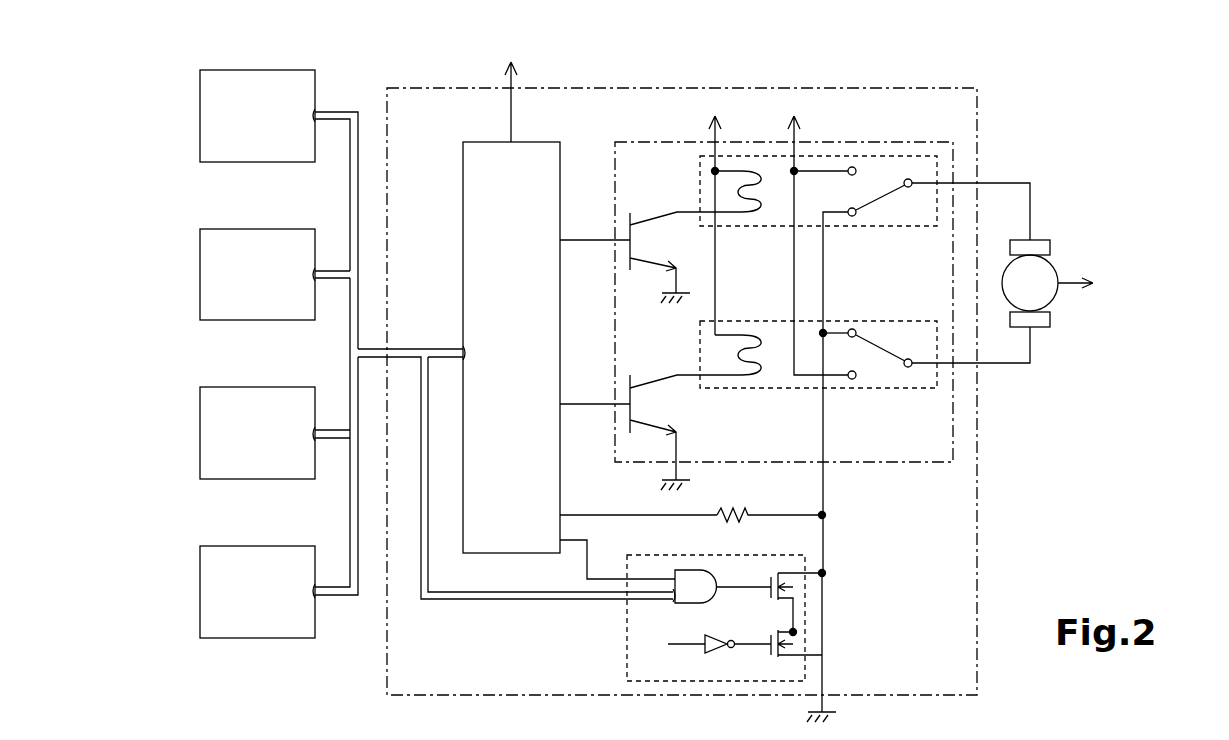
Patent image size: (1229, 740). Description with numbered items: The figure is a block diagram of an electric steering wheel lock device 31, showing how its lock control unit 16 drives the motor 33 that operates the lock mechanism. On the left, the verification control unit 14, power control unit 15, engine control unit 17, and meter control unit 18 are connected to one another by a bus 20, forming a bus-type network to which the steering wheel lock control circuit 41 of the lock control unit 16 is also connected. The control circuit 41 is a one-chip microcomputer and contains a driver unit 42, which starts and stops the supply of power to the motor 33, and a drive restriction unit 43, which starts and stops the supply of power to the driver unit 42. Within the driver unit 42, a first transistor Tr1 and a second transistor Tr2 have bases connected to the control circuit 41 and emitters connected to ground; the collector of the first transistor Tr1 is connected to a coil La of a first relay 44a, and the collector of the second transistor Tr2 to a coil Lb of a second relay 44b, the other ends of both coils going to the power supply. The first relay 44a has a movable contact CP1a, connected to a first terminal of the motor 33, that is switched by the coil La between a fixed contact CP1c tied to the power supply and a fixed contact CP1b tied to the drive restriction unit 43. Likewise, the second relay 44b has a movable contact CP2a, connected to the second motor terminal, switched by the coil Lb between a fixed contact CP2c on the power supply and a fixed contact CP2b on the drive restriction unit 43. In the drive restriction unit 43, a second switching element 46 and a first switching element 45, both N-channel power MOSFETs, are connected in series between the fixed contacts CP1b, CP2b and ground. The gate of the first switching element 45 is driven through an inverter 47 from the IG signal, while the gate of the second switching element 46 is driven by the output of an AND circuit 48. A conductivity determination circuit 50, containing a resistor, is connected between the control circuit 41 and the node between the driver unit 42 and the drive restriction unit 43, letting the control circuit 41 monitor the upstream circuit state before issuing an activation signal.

The verification control unit 14 is at (238, 70).
The power control unit 15 is at (230, 229).
The lock control unit 16 is at (977, 108).
The engine control unit 17 is at (230, 387).
The meter control unit 18 is at (230, 546).
The bus 20 is at (345, 111).
The steering wheel lock device 31 is at (1084, 92).
The motor 33 is at (1061, 268).
The steering wheel lock control circuit 41 is at (483, 142).
The driver unit 42 is at (953, 157).
The drive restriction unit 43 is at (627, 650).
The first relay 44a is at (700, 172).
The second relay 44b is at (700, 335).
The first switching element 45 is at (771, 640).
The second switching element 46 is at (771, 582).
The inverter 47 is at (705, 653).
The AND circuit 48 is at (690, 604).
The conductivity determination circuit 50 is at (826, 511).
The first transistor Tr1 is at (622, 252).
The second transistor Tr2 is at (622, 416).
The coil La is at (748, 169).
The coil Lb is at (748, 333).
The movable contact CP1a is at (908, 179).
The fixed contact CP1b is at (855, 217).
The fixed contact CP1c is at (852, 167).
The movable contact CP2a is at (909, 359).
The fixed contact CP2b is at (852, 329).
The fixed contact CP2c is at (852, 380).